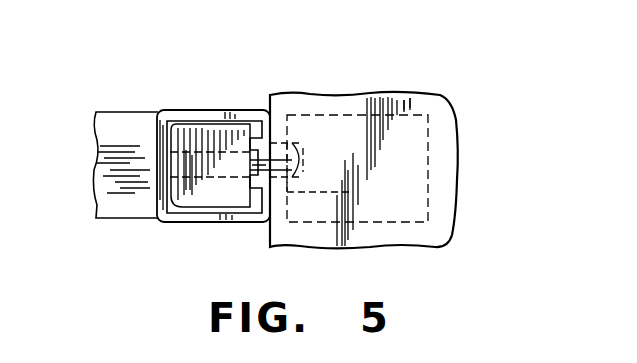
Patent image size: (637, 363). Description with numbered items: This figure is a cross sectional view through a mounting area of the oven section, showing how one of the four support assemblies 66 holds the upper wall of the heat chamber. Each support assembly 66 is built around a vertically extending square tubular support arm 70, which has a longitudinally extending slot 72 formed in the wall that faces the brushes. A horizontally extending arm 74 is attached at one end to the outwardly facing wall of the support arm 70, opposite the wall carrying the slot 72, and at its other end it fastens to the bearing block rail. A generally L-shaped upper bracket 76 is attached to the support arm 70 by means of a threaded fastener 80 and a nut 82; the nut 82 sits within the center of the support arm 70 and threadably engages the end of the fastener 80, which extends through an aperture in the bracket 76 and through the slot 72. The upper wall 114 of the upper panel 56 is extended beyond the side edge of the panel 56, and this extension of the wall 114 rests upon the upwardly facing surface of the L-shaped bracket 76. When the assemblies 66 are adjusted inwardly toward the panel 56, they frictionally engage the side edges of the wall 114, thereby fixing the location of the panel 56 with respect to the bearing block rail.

The upper panel 56 is at (457, 153).
The support assembly 66 is at (252, 85).
The support arm 70 is at (193, 112).
The slot 72 is at (290, 158).
The horizontally extending arm 74 is at (115, 134).
The upper bracket 76 is at (402, 222).
The threaded fastener 80 is at (357, 168).
The nut 82 is at (175, 206).
The upper wall 114 is at (410, 98).